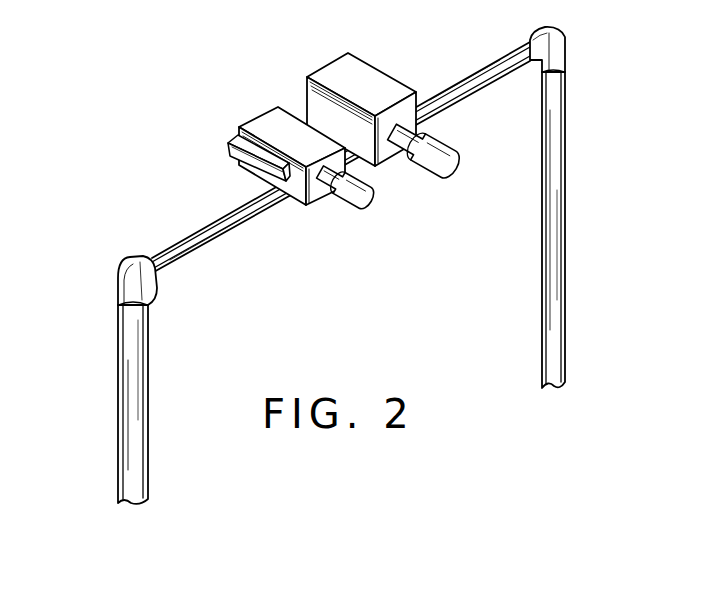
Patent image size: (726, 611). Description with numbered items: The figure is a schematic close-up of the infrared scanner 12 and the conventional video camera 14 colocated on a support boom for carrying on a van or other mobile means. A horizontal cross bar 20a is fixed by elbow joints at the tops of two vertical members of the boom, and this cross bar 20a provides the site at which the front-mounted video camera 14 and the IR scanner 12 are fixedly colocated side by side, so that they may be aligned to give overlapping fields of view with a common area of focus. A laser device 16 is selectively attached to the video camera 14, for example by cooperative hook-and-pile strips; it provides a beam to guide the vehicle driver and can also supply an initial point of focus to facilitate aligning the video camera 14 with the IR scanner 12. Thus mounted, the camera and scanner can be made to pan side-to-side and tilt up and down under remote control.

The infrared scanner 12 is at (360, 72).
The video camera 14 is at (272, 123).
The laser device 16 is at (228, 142).
The horizontal cross bar 20a is at (225, 233).